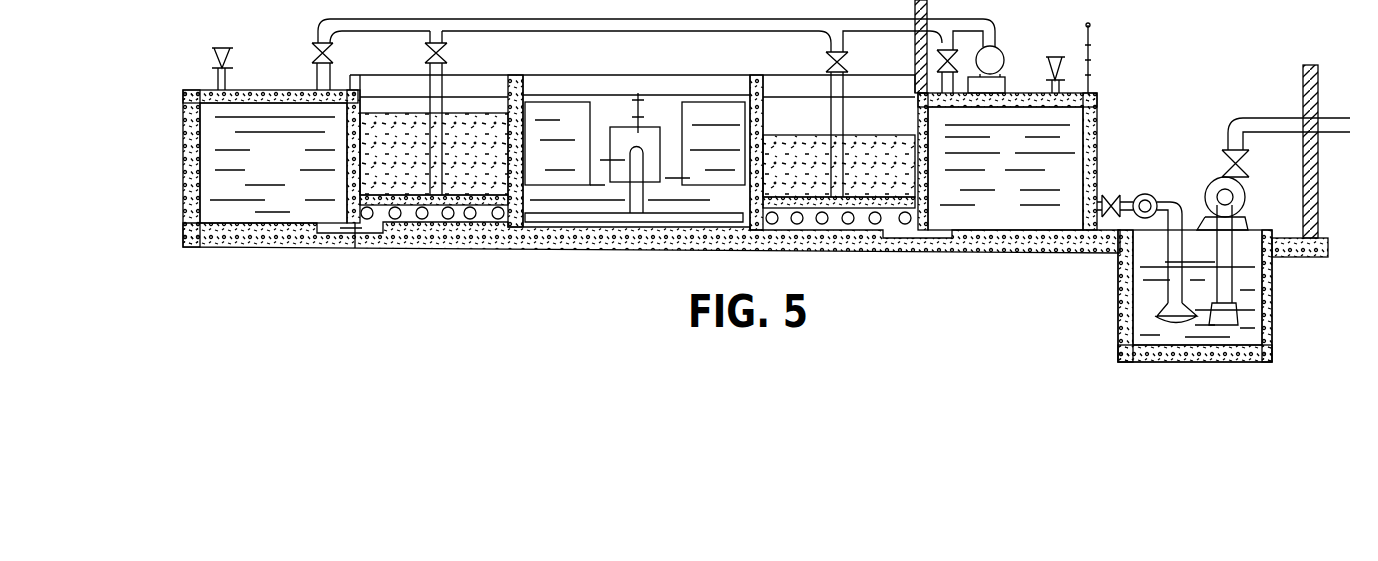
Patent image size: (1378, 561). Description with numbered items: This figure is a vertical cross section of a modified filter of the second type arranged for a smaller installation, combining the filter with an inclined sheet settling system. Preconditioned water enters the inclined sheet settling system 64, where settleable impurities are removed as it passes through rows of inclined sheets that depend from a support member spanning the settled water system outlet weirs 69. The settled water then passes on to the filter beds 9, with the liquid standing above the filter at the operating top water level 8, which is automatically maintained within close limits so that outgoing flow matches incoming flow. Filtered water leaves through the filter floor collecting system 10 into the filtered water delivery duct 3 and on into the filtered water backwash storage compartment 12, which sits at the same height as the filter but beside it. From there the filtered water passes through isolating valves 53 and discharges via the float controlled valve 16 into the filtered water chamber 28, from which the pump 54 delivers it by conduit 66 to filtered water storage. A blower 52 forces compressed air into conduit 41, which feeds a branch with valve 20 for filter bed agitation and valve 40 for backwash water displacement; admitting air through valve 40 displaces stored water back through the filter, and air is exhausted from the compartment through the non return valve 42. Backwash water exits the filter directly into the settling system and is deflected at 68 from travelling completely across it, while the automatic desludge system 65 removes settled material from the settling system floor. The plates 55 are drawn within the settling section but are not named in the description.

The filtered water delivery duct 3 is at (352, 249).
The filter operating top water level 8 is at (415, 96).
The filter beds 9 is at (637, 160).
The filter floor collecting system 10 is at (395, 219).
The filtered water backwash storage compartment 12 is at (640, 168).
The float controlled filter outlet valve 16 is at (1162, 310).
The valve 20 is at (447, 55).
The filtered water chamber 28 is at (1252, 288).
The valve 40 is at (335, 57).
The conduit 41 is at (633, 33).
The non return valve 42 is at (225, 45).
The blower 52 is at (986, 69).
The isolating valves 53 is at (1112, 197).
The pump 54 is at (1216, 184).
The electrode plates 55 is at (635, 151).
The inclined sheet settling system 64 is at (649, 150).
The automatic desludge system 65 is at (672, 231).
The delivery conduit 66 is at (1295, 118).
The backwash water deflector 68 is at (636, 112).
The settled water system outlet weirs 69 is at (516, 108).